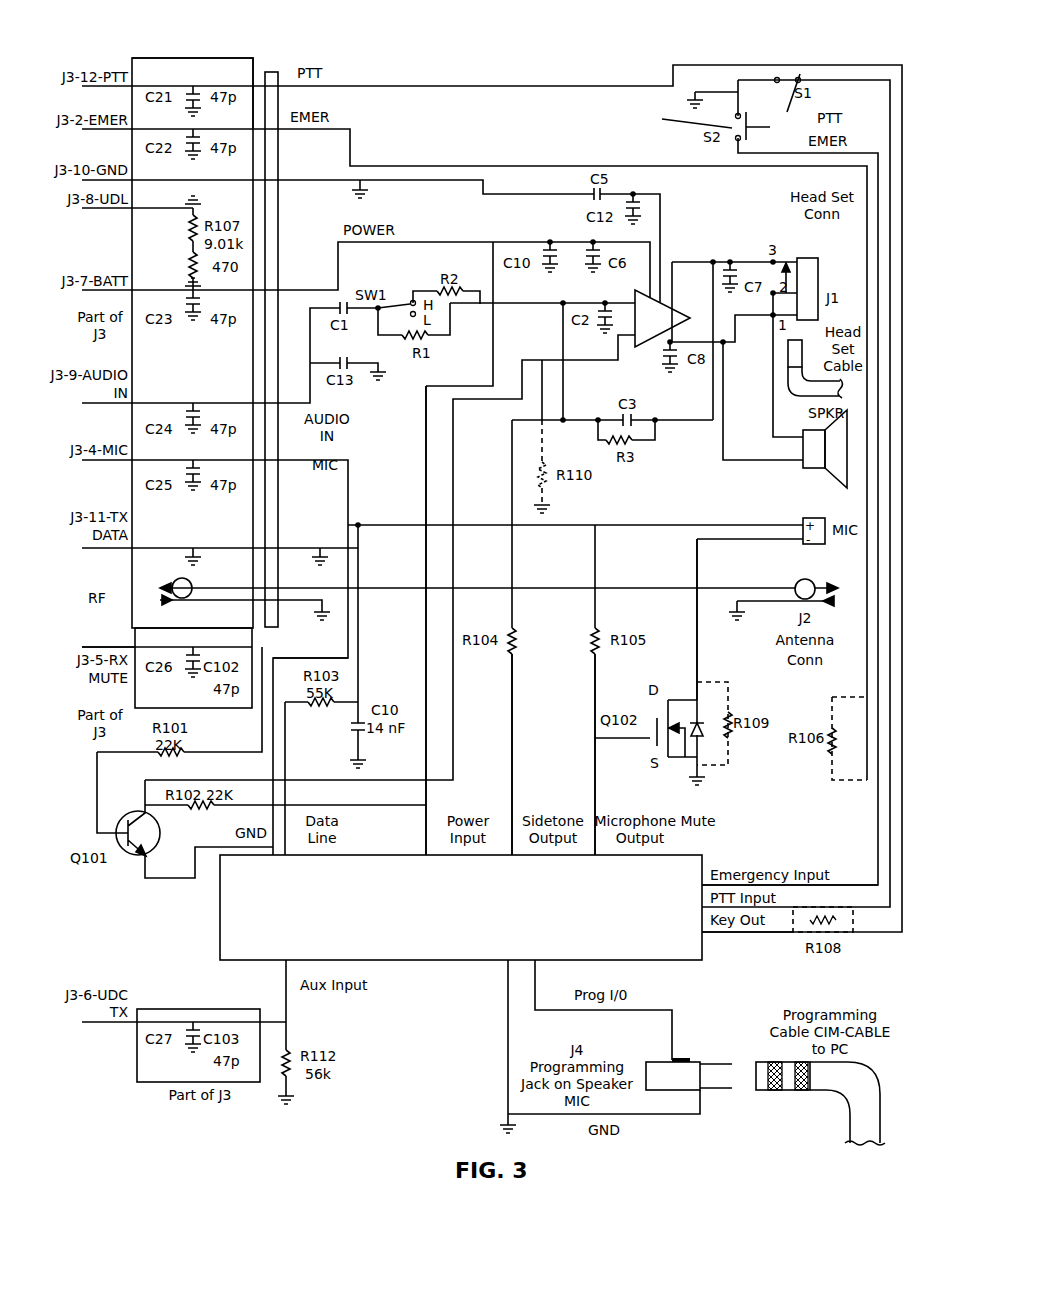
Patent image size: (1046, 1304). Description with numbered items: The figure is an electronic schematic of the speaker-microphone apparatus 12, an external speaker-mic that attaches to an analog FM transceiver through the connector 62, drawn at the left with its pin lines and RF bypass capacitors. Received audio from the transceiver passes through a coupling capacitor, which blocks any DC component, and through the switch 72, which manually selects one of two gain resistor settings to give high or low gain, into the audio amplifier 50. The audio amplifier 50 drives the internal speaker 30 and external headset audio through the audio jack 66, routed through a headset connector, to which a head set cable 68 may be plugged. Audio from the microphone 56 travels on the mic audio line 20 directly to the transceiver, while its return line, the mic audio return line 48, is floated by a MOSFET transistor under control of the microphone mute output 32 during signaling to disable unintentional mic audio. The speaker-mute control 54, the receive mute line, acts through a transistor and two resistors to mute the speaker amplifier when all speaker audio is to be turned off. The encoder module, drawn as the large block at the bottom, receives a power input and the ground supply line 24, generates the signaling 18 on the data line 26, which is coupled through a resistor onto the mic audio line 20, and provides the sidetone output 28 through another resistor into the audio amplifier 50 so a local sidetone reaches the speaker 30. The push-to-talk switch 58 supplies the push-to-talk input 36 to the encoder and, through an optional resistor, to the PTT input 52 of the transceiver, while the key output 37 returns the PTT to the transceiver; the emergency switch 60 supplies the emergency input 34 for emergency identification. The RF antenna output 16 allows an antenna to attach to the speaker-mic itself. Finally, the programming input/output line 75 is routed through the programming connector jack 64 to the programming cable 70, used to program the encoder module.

The speaker-microphone apparatus 12 is at (105, 32).
The connector 62 is at (193, 58).
The PTT input of transceiver 52 is at (222, 84).
The push-to-talk switch 58 is at (787, 75).
The emergency switch 60 is at (690, 113).
The switch 72 is at (378, 282).
The audio jack 66 is at (808, 258).
The audio amplifier 50 is at (637, 360).
The head set cable 68 is at (790, 350).
The speaker 30 is at (808, 462).
The microphone 56 is at (812, 518).
The mic audio line 20 is at (348, 492).
The mic audio return line 48 is at (697, 565).
The RF antenna output 16 is at (800, 580).
The speaker-mute control 54 is at (110, 647).
The ground supply line 24 is at (320, 658).
The MDC-1200 signaling line 18 is at (358, 655).
The data line 26 is at (285, 770).
The sidetone output 28 is at (512, 808).
The microphone mute output 32 is at (595, 803).
The emergency input 34 is at (857, 882).
The push-to-talk input 36 is at (790, 910).
The key output 37 is at (735, 932).
The programming input/output line 75 is at (640, 1010).
The programming connector jack 64 is at (700, 1062).
The programming cable 70 is at (790, 1090).